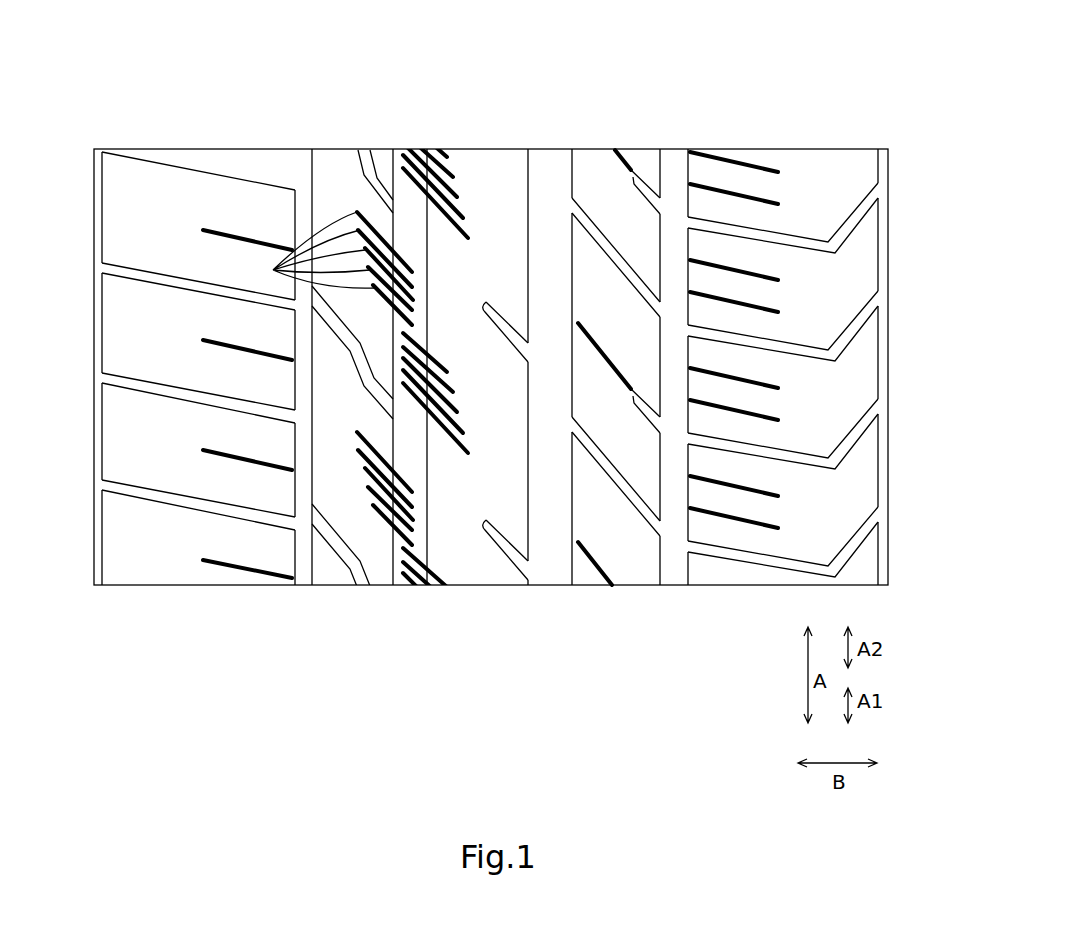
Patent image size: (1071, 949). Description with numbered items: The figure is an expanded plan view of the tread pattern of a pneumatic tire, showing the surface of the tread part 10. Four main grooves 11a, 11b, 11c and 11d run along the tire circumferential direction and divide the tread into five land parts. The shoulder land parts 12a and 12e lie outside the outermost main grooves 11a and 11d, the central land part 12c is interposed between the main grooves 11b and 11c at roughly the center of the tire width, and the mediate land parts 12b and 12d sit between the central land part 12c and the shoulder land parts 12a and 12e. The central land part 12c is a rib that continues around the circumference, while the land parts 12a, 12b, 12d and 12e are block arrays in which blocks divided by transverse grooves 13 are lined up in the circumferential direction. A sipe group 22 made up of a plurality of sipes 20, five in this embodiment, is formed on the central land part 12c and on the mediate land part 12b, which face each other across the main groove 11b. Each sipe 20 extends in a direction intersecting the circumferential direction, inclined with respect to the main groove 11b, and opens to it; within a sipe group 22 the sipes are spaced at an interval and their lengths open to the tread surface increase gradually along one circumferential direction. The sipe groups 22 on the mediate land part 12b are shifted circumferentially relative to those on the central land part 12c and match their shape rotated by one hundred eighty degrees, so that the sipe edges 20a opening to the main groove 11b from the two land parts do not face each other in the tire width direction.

The tread part 10 is at (509, 20).
The main groove 11a is at (303, 175).
The main groove 11b is at (408, 222).
The main groove 11c is at (553, 207).
The main groove 11d is at (677, 193).
The shoulder land part 12a is at (185, 463).
The mediate land part 12b is at (368, 528).
The central land part 12c is at (472, 505).
The mediate land part 12d is at (613, 530).
The shoulder land part 12e is at (790, 518).
The transverse groove 13 is at (338, 325).
The sipe 20 is at (373, 505).
The sipe edge 20a is at (357, 362).
The sipe group 22 is at (399, 233).